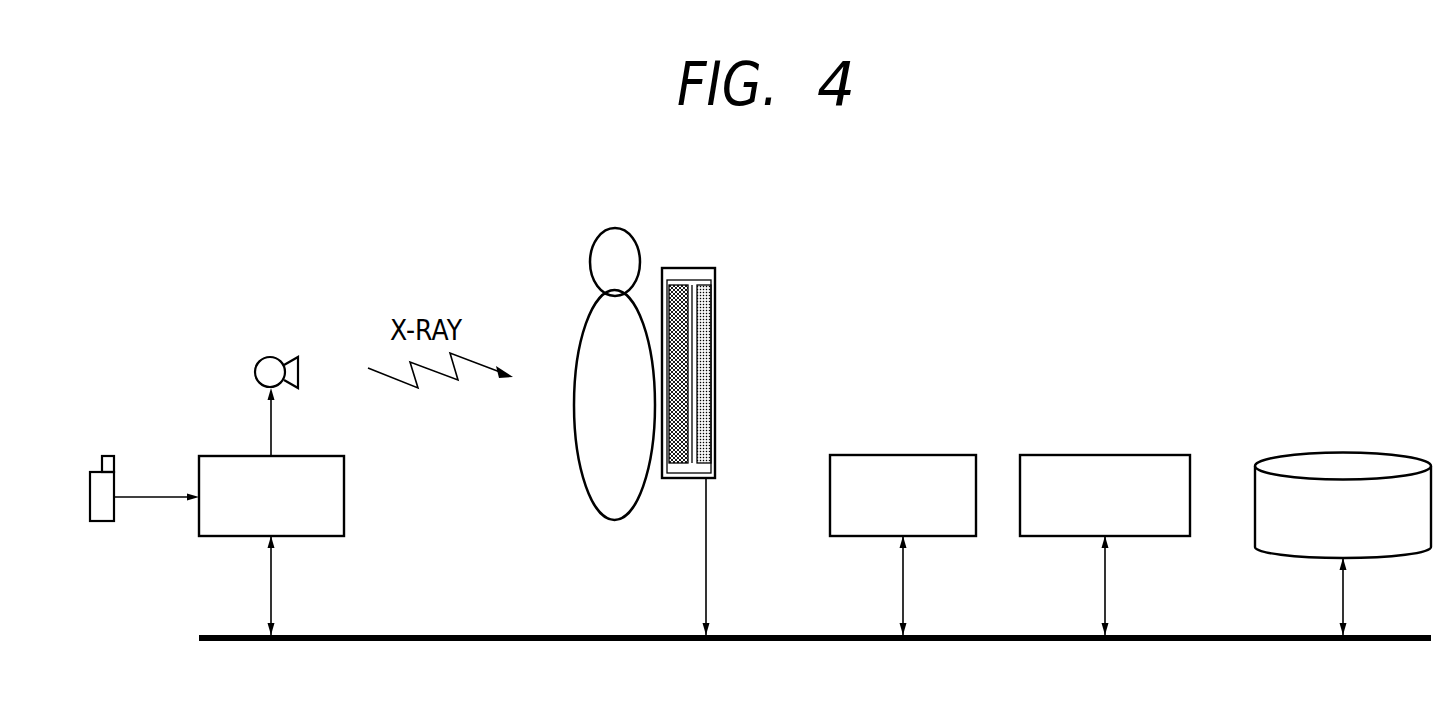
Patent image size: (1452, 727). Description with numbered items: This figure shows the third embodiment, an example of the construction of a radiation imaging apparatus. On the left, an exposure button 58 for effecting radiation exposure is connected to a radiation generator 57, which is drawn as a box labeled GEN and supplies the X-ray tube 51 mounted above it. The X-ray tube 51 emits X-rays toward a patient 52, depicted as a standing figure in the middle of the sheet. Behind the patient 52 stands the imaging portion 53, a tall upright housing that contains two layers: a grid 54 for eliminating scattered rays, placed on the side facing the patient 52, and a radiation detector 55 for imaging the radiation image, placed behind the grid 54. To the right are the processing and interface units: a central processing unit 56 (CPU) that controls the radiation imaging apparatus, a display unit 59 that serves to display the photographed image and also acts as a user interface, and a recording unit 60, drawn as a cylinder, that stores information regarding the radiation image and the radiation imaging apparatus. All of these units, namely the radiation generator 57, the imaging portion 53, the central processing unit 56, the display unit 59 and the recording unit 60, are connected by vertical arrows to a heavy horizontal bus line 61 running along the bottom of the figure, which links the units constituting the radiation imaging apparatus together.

The X-ray tube 51 is at (277, 353).
The patient 52 is at (620, 228).
The imaging portion 53 is at (695, 267).
The grid 54 is at (687, 324).
The radiation detector 55 is at (703, 365).
The central processing unit 56 is at (925, 453).
The radiation generator 57 is at (293, 455).
The exposure button 58 is at (112, 453).
The display unit 59 is at (1133, 453).
The recording unit 60 is at (1372, 453).
The bus line 61 is at (462, 635).